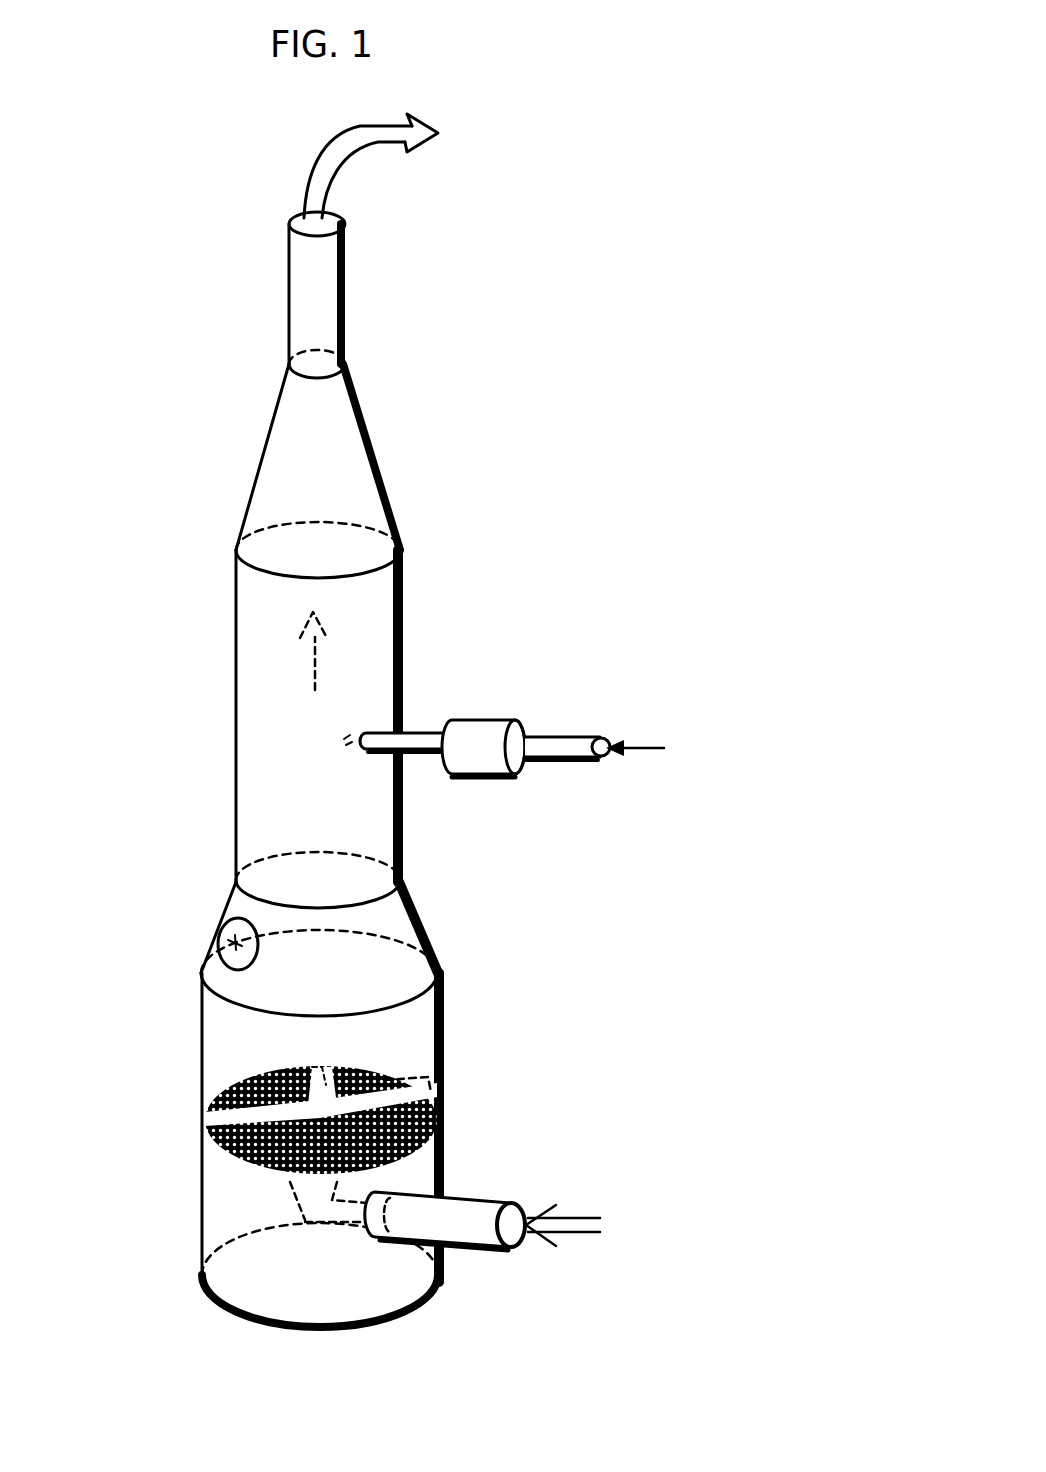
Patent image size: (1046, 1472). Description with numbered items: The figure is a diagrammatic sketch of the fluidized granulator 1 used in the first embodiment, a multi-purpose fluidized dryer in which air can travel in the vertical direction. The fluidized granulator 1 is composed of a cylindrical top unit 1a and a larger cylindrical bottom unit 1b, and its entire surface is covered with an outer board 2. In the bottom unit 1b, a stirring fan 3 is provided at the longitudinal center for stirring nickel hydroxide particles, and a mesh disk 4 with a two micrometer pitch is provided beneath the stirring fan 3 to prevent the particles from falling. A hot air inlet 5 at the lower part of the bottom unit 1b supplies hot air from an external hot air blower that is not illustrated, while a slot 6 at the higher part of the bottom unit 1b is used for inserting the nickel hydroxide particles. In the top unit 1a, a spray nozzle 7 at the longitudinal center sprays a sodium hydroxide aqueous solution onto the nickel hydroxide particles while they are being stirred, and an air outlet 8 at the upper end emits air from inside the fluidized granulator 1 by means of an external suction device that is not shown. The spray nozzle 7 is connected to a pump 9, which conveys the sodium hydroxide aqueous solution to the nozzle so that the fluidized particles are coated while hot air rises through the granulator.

The fluidized granulator 1 is at (404, 408).
The cylindrical top unit 1a is at (212, 697).
The cylindrical bottom unit 1b is at (177, 1062).
The outer board 2 is at (383, 497).
The stirring fan 3 is at (387, 1080).
The mesh disk 4 is at (443, 1108).
The hot air inlet 5 is at (478, 1212).
The slot 6 is at (234, 942).
The spray nozzle 7 is at (602, 745).
The air outlet 8 is at (327, 289).
The pump 9 is at (481, 758).